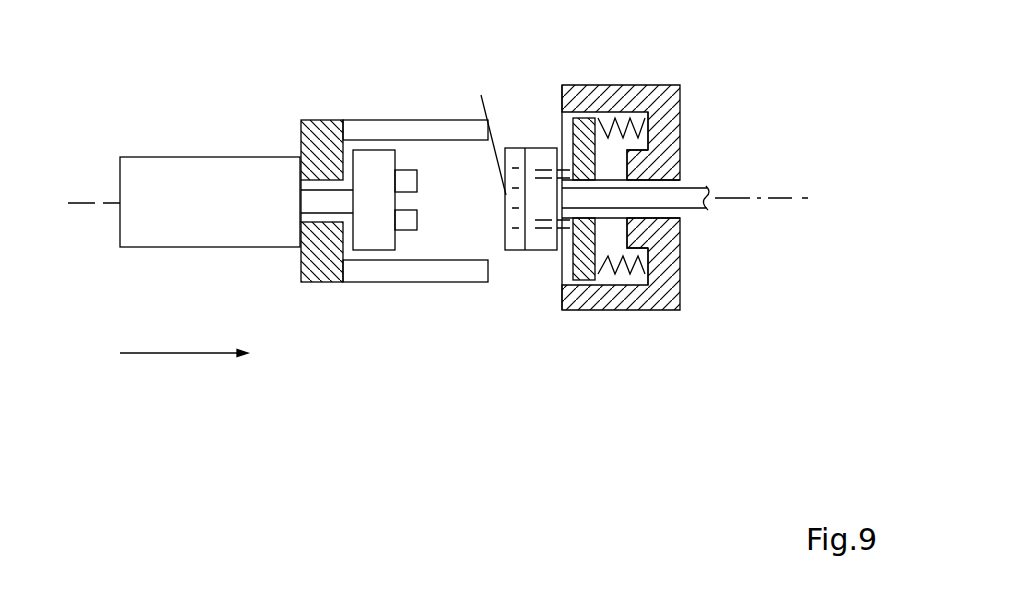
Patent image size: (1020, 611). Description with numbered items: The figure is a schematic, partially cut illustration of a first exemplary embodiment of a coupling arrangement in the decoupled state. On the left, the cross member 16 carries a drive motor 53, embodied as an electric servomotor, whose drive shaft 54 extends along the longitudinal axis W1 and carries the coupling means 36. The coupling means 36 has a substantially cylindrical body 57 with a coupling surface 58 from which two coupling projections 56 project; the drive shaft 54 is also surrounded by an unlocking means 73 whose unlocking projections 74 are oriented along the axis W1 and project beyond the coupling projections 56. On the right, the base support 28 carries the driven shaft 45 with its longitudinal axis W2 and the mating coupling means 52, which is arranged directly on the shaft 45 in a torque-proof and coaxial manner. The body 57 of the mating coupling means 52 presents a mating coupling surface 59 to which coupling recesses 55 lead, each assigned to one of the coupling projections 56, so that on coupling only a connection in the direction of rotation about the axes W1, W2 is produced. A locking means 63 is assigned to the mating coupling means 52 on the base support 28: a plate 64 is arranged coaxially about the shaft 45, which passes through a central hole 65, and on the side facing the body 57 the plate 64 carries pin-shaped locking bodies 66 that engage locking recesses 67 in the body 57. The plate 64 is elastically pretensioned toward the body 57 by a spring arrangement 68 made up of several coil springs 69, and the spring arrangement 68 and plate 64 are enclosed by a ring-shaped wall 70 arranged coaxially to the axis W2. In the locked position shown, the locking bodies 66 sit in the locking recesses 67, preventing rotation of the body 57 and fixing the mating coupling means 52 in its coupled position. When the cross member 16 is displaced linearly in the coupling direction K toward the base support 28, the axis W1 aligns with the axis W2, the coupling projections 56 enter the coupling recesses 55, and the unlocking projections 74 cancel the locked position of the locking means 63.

The drive motor 53 is at (250, 172).
The cross member 16 is at (308, 132).
The coupling means 36 is at (363, 157).
The unlocking means 73 is at (372, 108).
The unlocking projections 74 is at (350, 273).
The coupling recesses 55 is at (505, 205).
The mating coupling means 52 is at (538, 150).
The locking means 63 is at (556, 104).
The locking recesses 67 is at (546, 230).
The locking bodies 66 is at (594, 273).
The base support 28 is at (660, 85).
The spring arrangement 68 is at (572, 170).
The coil springs 69 is at (672, 282).
The central hole 65 is at (603, 187).
The longitudinal axis of the drive shaft W1 is at (84, 205).
The coupling direction K is at (185, 355).
The drive shaft 54 is at (310, 203).
The coupling surface 58 is at (397, 246).
The coupling projections 56 is at (403, 222).
The mating coupling surface 59 is at (505, 250).
The cylindrical body 57 is at (552, 250).
The plate 64 is at (604, 270).
The ring-shaped wall 70 is at (681, 292).
The driven shaft 45 is at (702, 203).
The longitudinal axis of the driven shaft W2 is at (783, 200).